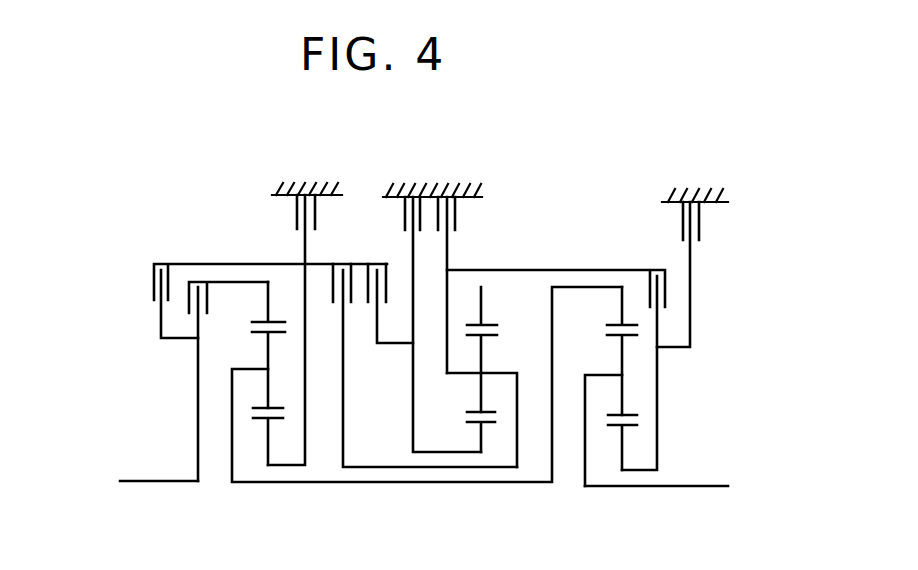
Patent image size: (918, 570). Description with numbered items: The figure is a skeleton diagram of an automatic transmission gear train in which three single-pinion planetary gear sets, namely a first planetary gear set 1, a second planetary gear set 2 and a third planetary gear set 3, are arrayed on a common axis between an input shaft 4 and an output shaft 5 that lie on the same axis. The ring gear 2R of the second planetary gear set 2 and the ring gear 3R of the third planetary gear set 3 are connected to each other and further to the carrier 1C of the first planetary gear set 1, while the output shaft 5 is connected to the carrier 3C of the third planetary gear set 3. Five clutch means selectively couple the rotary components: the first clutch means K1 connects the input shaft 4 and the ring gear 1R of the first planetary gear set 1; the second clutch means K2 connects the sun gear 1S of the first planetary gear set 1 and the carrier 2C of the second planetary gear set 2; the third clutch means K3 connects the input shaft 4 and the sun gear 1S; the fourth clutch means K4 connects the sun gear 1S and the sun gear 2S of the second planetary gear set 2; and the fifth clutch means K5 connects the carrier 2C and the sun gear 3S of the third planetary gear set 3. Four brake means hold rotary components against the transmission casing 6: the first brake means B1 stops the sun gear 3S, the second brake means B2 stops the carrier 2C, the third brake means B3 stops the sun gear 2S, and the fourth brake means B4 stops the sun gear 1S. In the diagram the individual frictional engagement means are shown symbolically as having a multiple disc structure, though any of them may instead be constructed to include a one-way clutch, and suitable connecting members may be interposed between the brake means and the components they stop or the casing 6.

The first planetary gear set 1 is at (415, 408).
The second planetary gear set 2 is at (468, 411).
The third planetary gear set 3 is at (606, 412).
The input shaft 4 is at (156, 480).
The output shaft 5 is at (697, 486).
The transmission casing 6 is at (295, 189).
The first clutch means K1 is at (228, 381).
The second clutch means K2 is at (423, 354).
The third clutch means K3 is at (268, 289).
The fourth clutch means K4 is at (390, 292).
The fifth clutch means K5 is at (556, 359).
The first brake means B1 is at (681, 254).
The second brake means B2 is at (452, 266).
The third brake means B3 is at (439, 305).
The fourth brake means B4 is at (291, 311).
The ring gear of the first planetary gear set 1R is at (274, 345).
The carrier of the first planetary gear set 1C is at (425, 384).
The sun gear of the first planetary gear set 1S is at (272, 436).
The ring gear of the second planetary gear set 2R is at (490, 349).
The carrier of the second planetary gear set 2C is at (482, 408).
The sun gear of the second planetary gear set 2S is at (466, 432).
The ring gear of the third planetary gear set 3R is at (612, 351).
The carrier of the third planetary gear set 3C is at (601, 417).
The sun gear of the third planetary gear set 3S is at (627, 442).